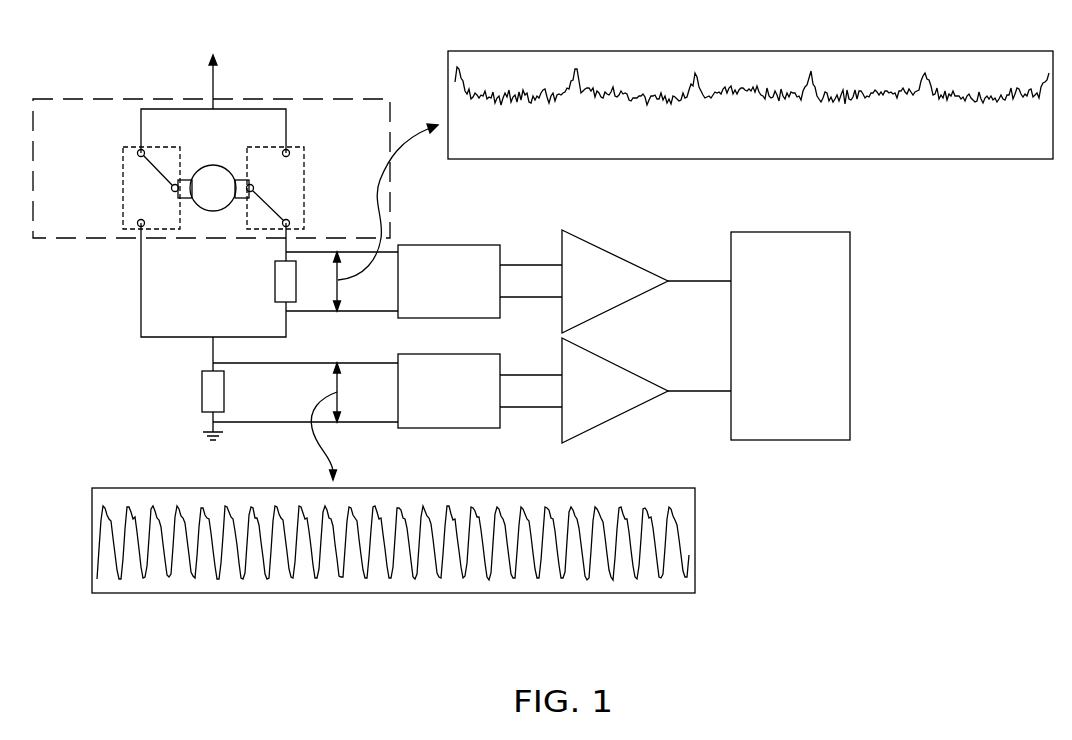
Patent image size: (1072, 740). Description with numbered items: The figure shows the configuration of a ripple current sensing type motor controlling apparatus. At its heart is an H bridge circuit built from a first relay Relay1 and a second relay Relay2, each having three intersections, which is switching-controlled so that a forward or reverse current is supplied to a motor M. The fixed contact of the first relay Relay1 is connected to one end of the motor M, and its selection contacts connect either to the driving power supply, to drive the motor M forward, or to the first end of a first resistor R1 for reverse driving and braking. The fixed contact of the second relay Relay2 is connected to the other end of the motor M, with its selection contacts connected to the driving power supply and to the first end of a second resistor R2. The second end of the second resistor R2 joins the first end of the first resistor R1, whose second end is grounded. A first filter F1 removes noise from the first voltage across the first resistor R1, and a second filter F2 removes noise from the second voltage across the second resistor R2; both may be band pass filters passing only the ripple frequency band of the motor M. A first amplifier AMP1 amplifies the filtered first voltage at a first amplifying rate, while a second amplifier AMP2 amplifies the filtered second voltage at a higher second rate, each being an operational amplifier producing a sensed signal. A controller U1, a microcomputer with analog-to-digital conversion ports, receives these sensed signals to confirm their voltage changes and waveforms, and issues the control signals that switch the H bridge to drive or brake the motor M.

The first relay Relay1 is at (111, 176).
The second relay Relay2 is at (317, 176).
The motor M is at (213, 188).
The first resistor R1 is at (229, 391).
The second resistor R2 is at (302, 281).
The first filter F1 is at (449, 406).
The second filter F2 is at (449, 266).
The first amplifier AMP1 is at (615, 401).
The second amplifier AMP2 is at (615, 271).
The controller U1 is at (790, 319).